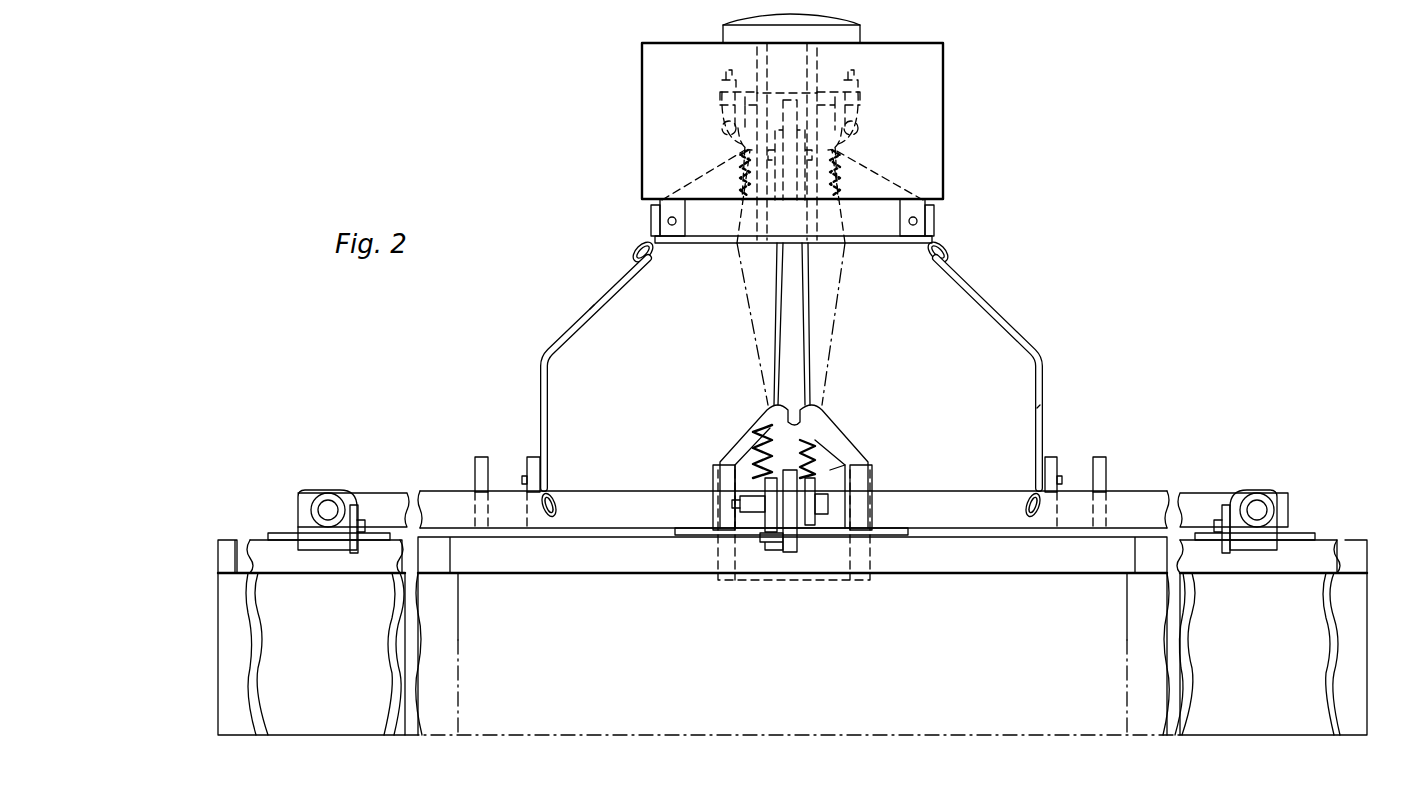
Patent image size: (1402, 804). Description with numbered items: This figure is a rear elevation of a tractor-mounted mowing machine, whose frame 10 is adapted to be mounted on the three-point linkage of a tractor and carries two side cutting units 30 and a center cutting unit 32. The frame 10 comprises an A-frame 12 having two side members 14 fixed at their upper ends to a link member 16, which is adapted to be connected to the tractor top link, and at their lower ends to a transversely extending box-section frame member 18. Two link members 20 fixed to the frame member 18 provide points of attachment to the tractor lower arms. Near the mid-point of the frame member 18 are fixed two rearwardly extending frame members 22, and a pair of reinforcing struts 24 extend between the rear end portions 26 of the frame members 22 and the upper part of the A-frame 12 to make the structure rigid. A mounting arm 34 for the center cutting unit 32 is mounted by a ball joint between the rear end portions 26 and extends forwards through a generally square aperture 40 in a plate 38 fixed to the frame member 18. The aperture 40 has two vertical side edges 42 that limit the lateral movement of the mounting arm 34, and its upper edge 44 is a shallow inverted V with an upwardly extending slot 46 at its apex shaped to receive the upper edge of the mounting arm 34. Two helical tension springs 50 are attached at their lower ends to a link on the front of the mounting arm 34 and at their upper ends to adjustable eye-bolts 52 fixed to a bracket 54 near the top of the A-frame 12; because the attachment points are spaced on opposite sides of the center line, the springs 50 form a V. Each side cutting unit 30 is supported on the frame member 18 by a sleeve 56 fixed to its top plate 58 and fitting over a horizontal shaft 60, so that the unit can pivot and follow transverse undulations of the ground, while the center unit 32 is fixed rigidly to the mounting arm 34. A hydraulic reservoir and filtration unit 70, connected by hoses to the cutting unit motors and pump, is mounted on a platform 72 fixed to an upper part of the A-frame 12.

The frame 10 is at (1040, 405).
The A-frame 12 is at (593, 305).
The side members 14 is at (540, 395).
The link member 16 is at (815, 75).
The transversely extending box-section frame member 18 is at (970, 495).
The link members 20 is at (530, 455).
The rearwardly extending frame members 22 is at (718, 482).
The reinforcing struts 24 is at (781, 328).
The rear end portions 26 is at (758, 522).
The side cutting units 30 is at (792, 637).
The center cutting unit 32 is at (792, 636).
The mounting arm 34 is at (790, 545).
The plate 38 is at (728, 450).
The aperture 40 is at (830, 475).
The vertical side edges 42 is at (718, 565).
The upper edge 44 is at (835, 450).
The slot 46 is at (775, 412).
The helical tension springs 50 is at (738, 270).
The adjustable eye-bolts 52 is at (862, 105).
The bracket 54 is at (748, 78).
The sleeve 56 is at (330, 488).
The top plate 58 is at (262, 540).
The horizontal shaft 60 is at (328, 510).
The hydraulic reservoir and filtration unit 70 is at (925, 142).
The platform 72 is at (895, 245).